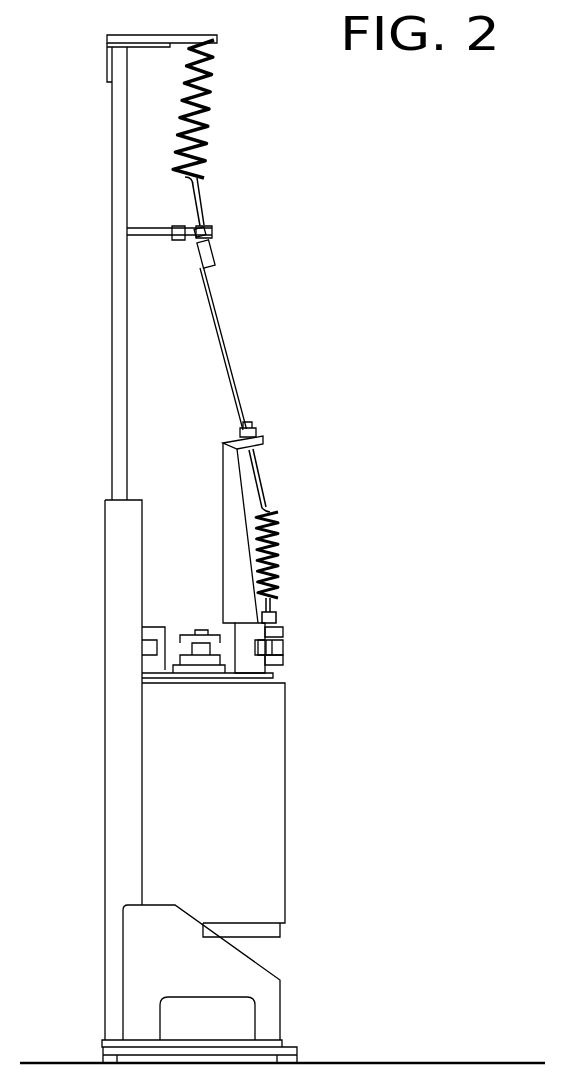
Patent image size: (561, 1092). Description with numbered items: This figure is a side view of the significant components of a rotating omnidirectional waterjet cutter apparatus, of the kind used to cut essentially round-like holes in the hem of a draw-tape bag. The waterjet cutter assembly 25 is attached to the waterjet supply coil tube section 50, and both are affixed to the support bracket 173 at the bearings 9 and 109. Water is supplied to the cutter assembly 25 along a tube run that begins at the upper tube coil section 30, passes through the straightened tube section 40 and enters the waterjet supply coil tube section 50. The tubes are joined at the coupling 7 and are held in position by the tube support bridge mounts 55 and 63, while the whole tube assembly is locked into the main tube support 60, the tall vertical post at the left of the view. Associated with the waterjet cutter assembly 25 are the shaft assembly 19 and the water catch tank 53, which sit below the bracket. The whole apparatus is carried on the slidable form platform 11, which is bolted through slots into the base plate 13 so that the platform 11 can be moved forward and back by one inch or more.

The coupling 7 is at (216, 258).
The bearing 9 is at (263, 438).
The slidable form platform 11 is at (268, 973).
The base plate 13 is at (288, 1052).
The shaft assembly 19 is at (203, 630).
The waterjet cutter assembly 25 is at (286, 646).
The upper tube coil section 30 is at (240, 96).
The straightened tube section 40 is at (231, 338).
The waterjet supply coil tube section 50 is at (274, 556).
The water catch tank 53 is at (283, 801).
The tube support bridge mount 55 is at (156, 228).
The main tube support 60 is at (112, 364).
The tube support bridge mount 63 is at (156, 37).
The bearing 109 is at (284, 631).
The support bracket 173 is at (222, 576).